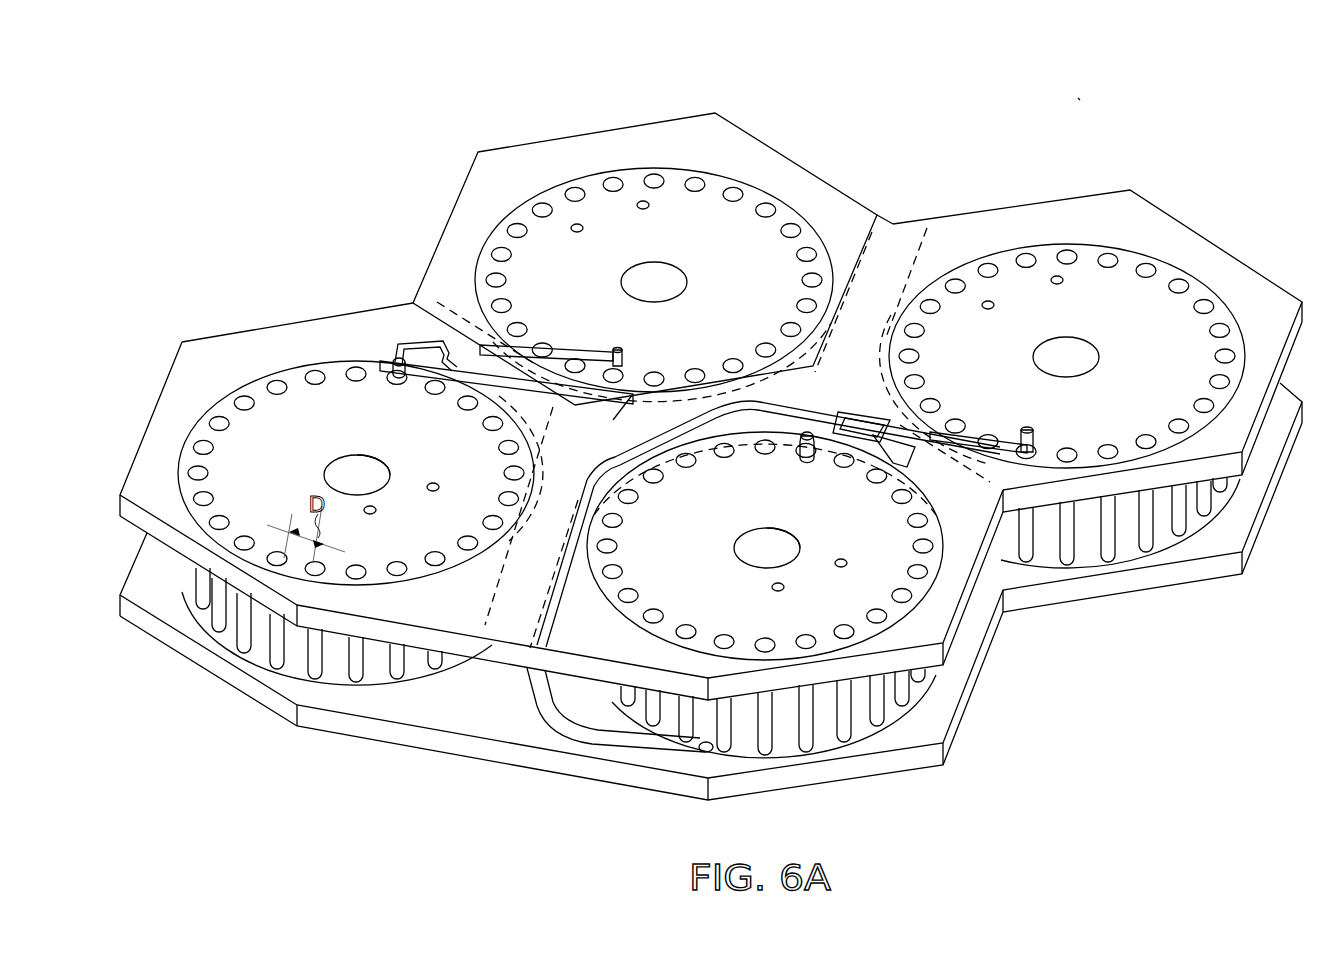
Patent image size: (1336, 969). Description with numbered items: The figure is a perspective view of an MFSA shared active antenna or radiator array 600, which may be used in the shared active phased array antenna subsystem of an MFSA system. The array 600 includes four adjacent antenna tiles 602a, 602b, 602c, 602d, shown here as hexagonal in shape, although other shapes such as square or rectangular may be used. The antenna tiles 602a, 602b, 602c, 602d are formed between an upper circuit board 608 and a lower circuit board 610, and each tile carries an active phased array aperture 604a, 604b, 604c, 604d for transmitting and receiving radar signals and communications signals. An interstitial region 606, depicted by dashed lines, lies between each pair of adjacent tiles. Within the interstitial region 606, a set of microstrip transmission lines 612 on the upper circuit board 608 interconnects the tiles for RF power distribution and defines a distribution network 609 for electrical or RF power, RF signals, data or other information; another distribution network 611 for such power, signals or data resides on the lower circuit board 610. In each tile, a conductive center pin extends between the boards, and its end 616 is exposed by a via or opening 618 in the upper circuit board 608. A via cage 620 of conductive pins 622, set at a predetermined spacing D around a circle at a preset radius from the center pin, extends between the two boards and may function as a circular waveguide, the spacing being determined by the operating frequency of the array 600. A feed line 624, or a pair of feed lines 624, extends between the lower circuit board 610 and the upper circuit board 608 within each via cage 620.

The MFSA shared active antenna or radiator array 600 is at (1085, 96).
The antenna tile 602a is at (165, 388).
The antenna tile 602b is at (790, 168).
The antenna tile 602c is at (1242, 272).
The antenna tile 602d is at (960, 622).
The active phased array aperture 604a is at (300, 366).
The active phased array aperture 604b is at (594, 176).
The active phased array aperture 604c is at (1003, 248).
The active phased array aperture 604d is at (945, 648).
The interstitial region 606 is at (437, 298).
The upper circuit board 608 is at (148, 420).
The distribution network 609 is at (727, 425).
The lower circuit board 610 is at (127, 565).
The distribution network 611 is at (574, 732).
The microstrip transmission lines 612 is at (412, 340).
The end of center pin 616 is at (370, 466).
The via or opening 618 is at (345, 466).
The via cage 620 is at (226, 404).
The pins 622 is at (222, 520).
The feed line 624 is at (437, 483).